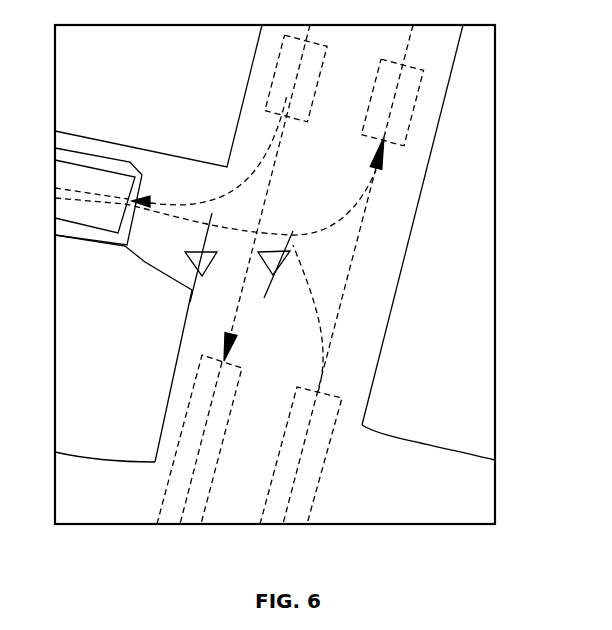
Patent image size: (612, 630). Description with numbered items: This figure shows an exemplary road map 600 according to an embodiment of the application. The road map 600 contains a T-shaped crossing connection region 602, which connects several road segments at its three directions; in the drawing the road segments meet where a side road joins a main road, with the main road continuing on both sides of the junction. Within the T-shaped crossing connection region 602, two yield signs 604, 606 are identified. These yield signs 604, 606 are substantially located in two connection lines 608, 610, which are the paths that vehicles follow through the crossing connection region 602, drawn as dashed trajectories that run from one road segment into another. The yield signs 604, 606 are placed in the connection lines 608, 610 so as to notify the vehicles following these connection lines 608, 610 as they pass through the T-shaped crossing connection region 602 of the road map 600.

The road map 600 is at (495, 118).
The T-shaped crossing connection region 602 is at (397, 198).
The yield sign 604 is at (185, 252).
The yield sign 606 is at (291, 251).
The connection line 608 is at (214, 257).
The connection line 610 is at (296, 269).